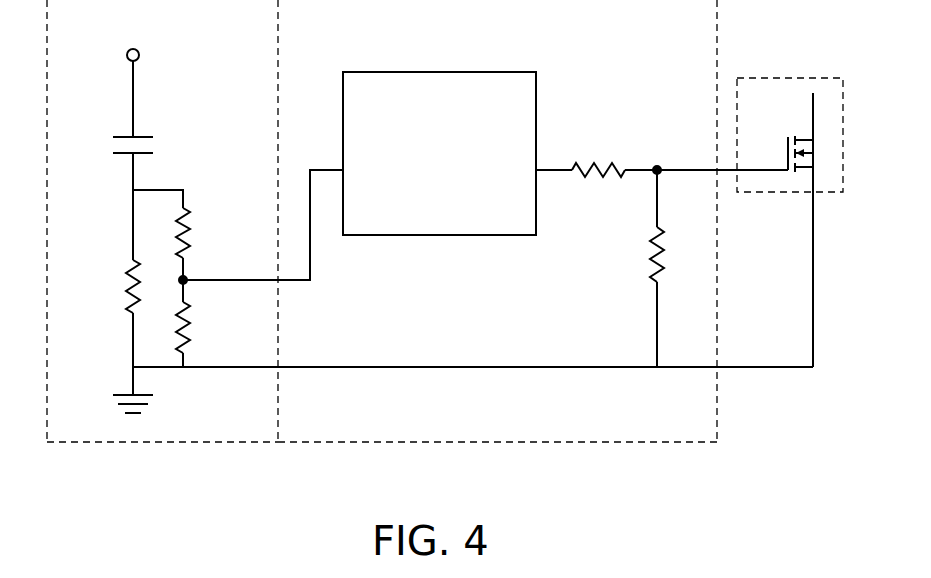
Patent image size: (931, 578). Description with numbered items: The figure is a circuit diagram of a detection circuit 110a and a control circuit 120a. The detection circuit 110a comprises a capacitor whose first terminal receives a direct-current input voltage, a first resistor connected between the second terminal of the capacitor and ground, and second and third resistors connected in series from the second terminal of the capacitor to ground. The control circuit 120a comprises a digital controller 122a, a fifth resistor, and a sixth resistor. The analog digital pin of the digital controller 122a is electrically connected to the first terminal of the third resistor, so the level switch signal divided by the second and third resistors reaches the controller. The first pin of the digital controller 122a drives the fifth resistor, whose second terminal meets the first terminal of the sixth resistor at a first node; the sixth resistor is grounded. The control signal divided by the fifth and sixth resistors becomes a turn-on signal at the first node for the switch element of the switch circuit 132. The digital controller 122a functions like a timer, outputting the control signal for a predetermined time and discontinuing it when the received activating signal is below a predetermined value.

The detection circuit 110a is at (163, 443).
The control circuit 120a is at (560, 264).
The digital controller 122a is at (438, 237).
The switch circuit 132 is at (775, 78).